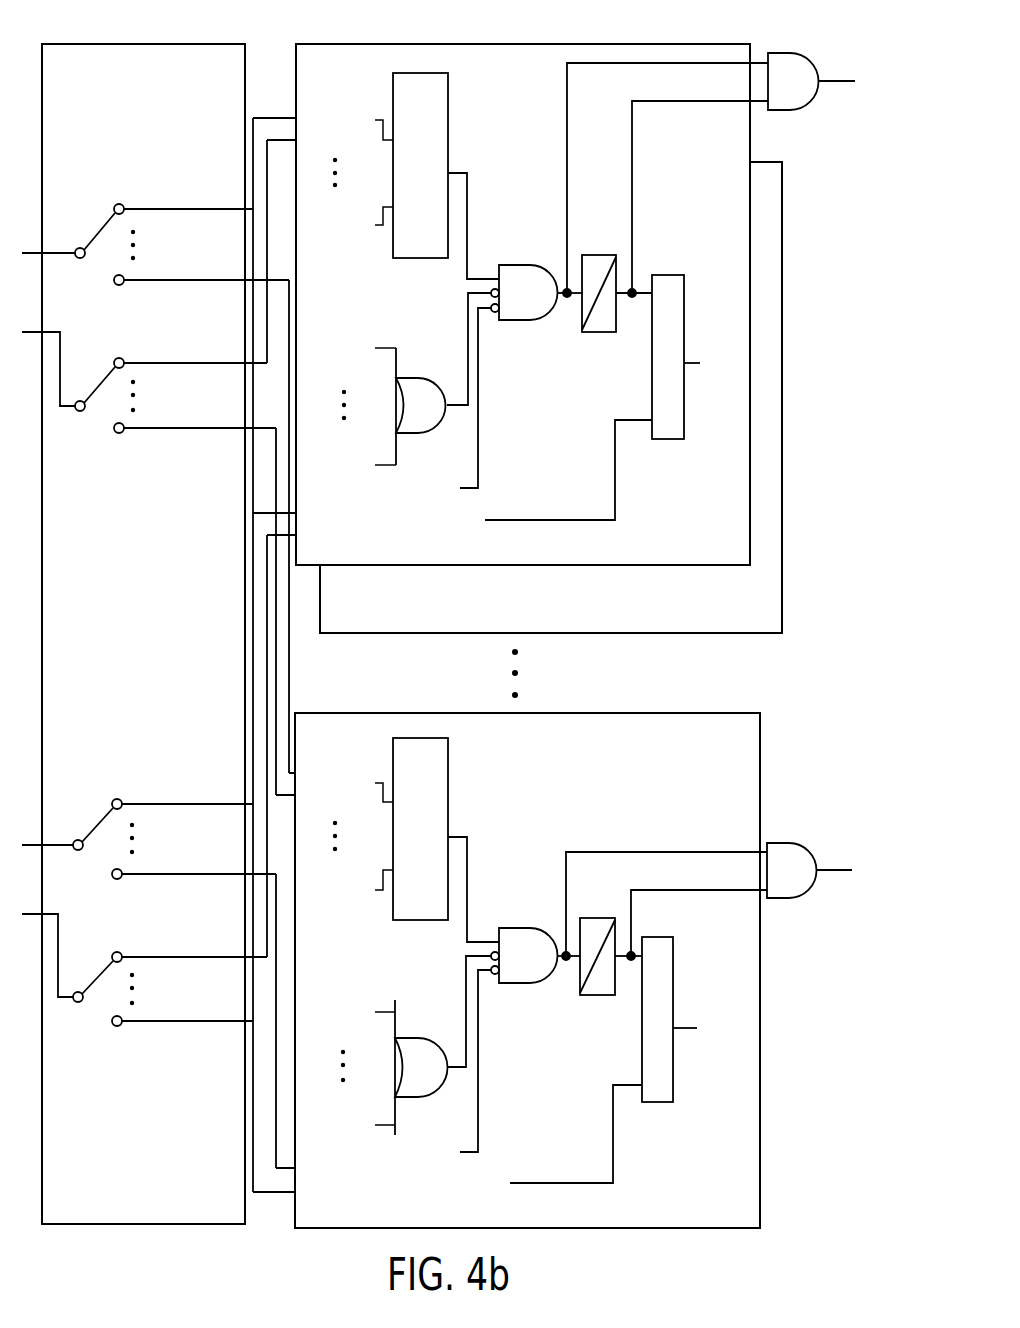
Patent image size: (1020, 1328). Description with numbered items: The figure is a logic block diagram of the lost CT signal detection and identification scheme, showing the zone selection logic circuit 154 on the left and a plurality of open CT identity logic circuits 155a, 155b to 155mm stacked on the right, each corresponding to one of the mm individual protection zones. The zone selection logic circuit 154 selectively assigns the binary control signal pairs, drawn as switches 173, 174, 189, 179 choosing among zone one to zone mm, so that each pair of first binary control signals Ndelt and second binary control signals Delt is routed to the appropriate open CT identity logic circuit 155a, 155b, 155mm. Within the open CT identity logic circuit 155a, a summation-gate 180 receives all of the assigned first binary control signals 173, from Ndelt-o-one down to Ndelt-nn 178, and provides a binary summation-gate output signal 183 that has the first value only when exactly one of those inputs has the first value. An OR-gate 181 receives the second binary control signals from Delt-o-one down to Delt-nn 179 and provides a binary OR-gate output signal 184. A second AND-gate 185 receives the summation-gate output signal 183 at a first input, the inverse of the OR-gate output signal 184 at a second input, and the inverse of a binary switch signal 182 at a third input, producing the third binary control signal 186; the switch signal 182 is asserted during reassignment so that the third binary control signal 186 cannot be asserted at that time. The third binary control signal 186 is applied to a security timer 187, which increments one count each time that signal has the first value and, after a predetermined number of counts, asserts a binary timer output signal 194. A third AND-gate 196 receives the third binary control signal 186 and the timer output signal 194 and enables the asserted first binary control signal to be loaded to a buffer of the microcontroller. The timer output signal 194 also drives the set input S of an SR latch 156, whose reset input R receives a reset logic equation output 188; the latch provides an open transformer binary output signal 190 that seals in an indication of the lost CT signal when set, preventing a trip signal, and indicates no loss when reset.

The zone selection logic circuit 154 is at (135, 44).
The open CT identity logic circuit 155a is at (585, 44).
The open CT identity logic circuit 155b is at (782, 574).
The open CT identity logic circuit 155mm is at (762, 1142).
The SR latch 156 is at (660, 275).
The first binary control signals 173 is at (62, 248).
The zone selection switch for Delt inputs 174 is at (50, 332).
The Ndeltnn input 178 is at (378, 224).
The zone selection switch / Deltnn input 179 is at (53, 908).
The summation-gate 180 is at (448, 120).
The OR-gate 181 is at (410, 376).
The binary switch signal 182 is at (478, 432).
The binary summation-gate output signal 183 is at (467, 220).
The binary OR-gate output signal 184 is at (468, 300).
The second AND-gate 185 is at (513, 320).
The third binary control signal 186 is at (567, 85).
The security timer 187 is at (596, 332).
The reset logic equation output 188 is at (612, 516).
The zone selection switch 189 is at (58, 839).
The open transformer binary output signal 190 is at (697, 366).
The binary timer output signal 194 is at (632, 182).
The third AND-gate 196 is at (777, 898).